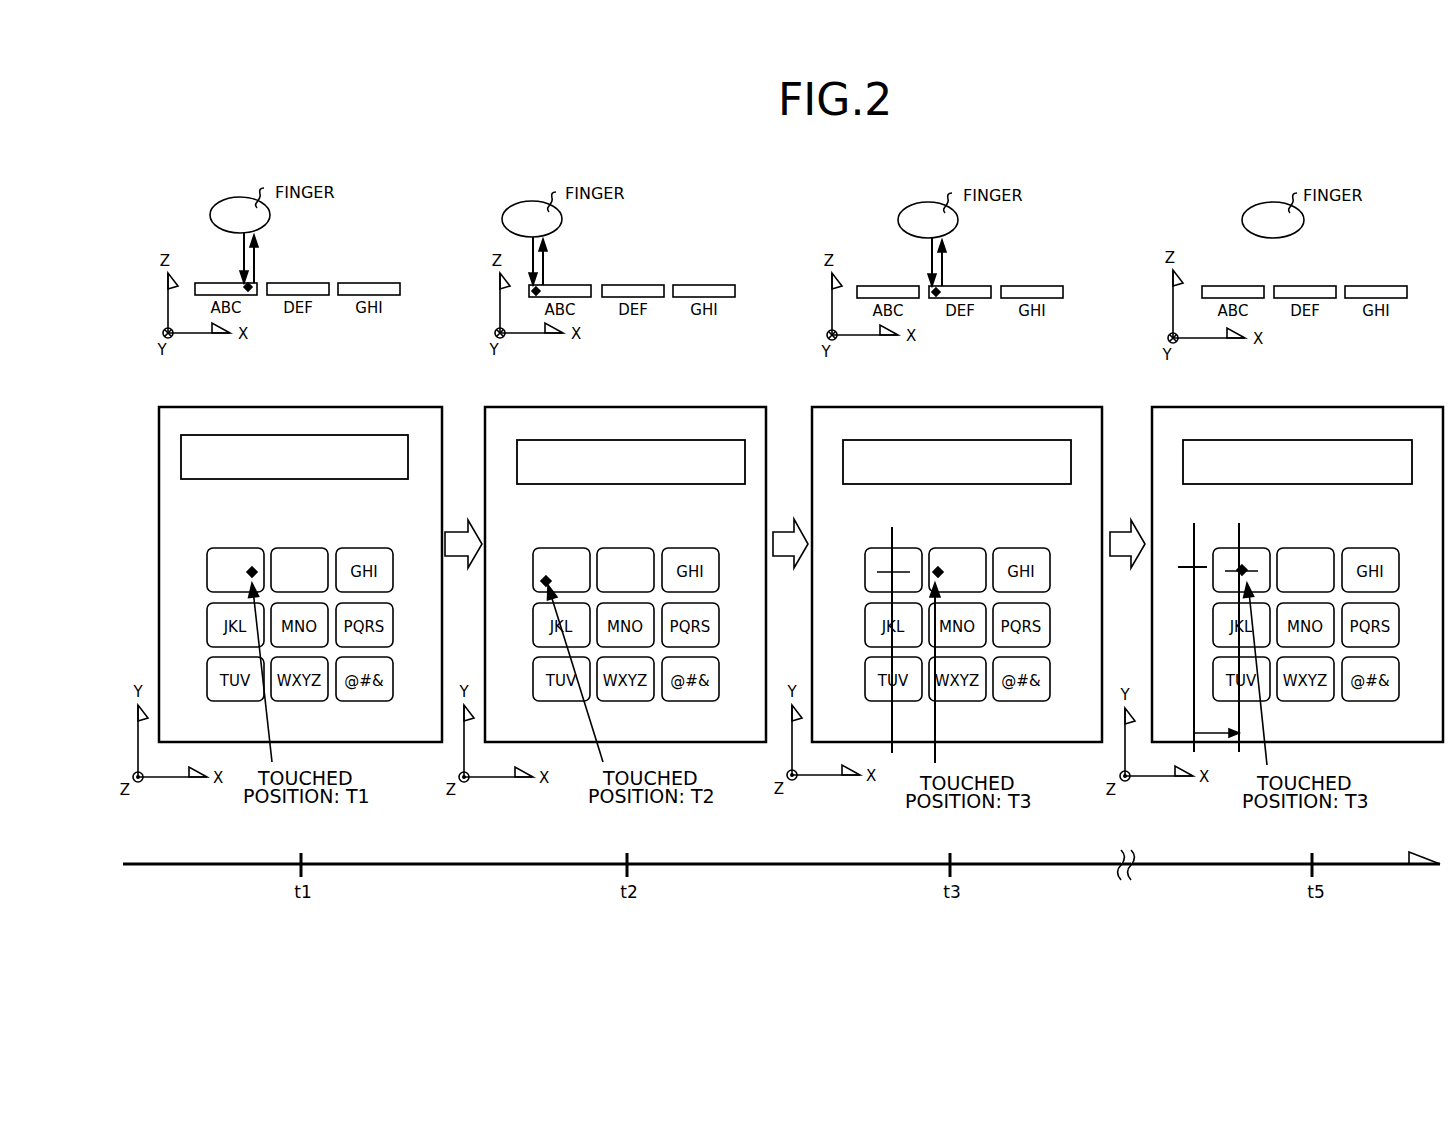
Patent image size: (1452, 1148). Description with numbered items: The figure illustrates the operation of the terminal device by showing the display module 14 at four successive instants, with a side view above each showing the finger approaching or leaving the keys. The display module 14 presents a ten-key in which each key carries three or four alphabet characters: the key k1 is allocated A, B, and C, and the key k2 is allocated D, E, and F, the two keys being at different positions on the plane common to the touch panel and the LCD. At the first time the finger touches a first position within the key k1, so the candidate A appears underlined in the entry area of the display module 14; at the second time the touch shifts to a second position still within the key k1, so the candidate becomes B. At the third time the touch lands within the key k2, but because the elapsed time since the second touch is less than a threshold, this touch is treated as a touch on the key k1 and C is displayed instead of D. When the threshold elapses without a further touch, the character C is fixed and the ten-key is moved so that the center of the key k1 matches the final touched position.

The display module 14 is at (377, 407).
The key k1 is at (228, 548).
The key k2 is at (291, 548).